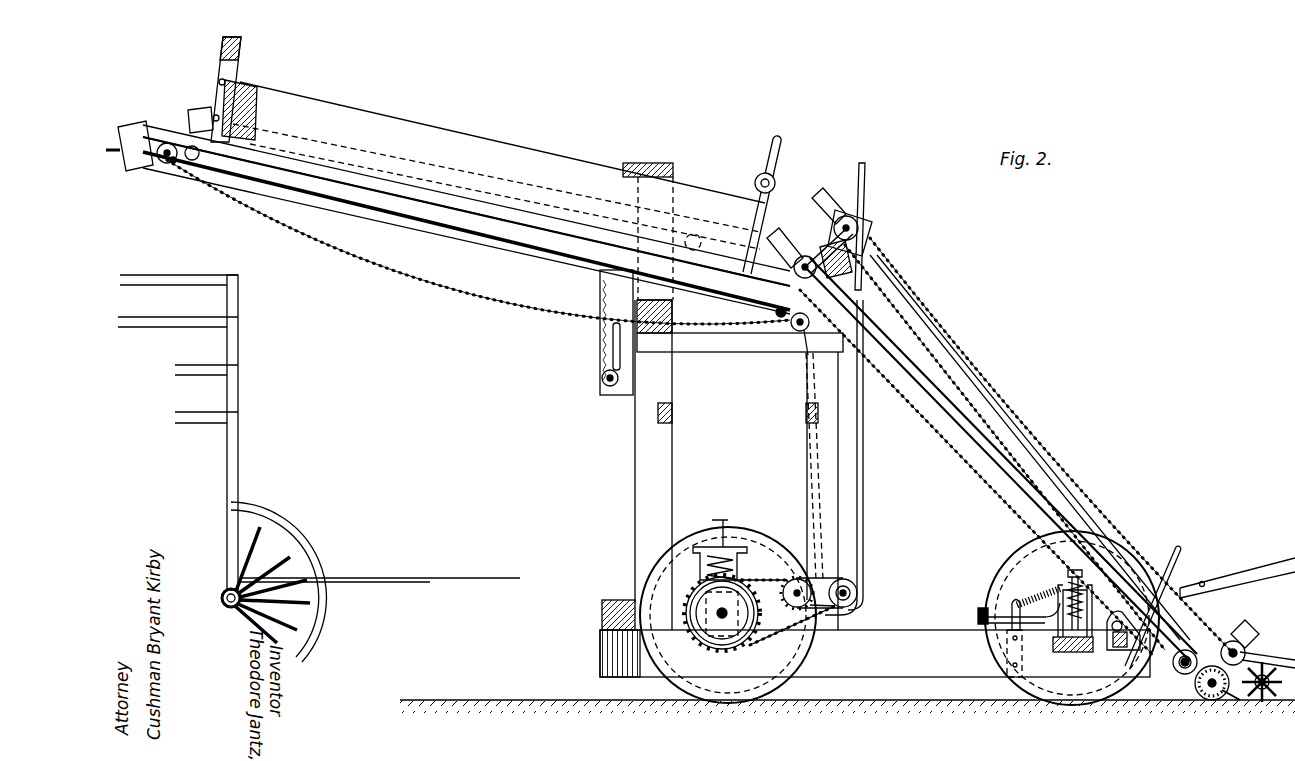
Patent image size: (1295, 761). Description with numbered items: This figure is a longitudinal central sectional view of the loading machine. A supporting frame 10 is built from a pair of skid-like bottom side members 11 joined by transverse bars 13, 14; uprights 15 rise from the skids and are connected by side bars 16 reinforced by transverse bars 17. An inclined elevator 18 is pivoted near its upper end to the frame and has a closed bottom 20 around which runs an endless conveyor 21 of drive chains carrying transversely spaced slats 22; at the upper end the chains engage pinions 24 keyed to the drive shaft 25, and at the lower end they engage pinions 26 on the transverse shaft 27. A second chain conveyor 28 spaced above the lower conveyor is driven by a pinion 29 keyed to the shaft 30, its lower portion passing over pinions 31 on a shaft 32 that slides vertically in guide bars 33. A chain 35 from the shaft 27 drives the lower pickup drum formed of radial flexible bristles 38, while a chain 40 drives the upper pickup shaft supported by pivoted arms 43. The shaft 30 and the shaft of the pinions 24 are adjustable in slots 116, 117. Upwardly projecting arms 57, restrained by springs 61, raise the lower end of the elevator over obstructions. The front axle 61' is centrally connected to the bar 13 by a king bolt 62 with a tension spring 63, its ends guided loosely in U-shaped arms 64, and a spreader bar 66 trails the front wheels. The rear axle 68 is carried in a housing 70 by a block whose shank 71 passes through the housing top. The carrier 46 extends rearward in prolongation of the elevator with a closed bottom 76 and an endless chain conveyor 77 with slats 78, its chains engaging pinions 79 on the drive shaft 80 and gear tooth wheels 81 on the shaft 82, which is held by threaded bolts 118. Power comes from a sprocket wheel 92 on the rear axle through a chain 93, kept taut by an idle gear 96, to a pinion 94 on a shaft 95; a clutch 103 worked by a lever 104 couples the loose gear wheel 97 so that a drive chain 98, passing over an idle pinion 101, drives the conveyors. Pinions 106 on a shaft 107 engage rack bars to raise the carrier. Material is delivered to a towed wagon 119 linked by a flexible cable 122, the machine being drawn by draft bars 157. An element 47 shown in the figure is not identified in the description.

The supporting frame 10 is at (635, 483).
The bottom side members 11 is at (600, 658).
The transverse bar 13 is at (1068, 652).
The transverse bar 14 is at (600, 618).
The uprights 15 is at (640, 452).
The side bars 16 is at (722, 352).
The transverse bars 17 is at (805, 412).
The inclined elevator 18 is at (947, 383).
The closed bottom 20 is at (1005, 495).
The endless conveyor 21 is at (965, 424).
The carrying ribs or slats 22 is at (917, 420).
The pinions 24 is at (802, 243).
The drive shaft 25 is at (808, 256).
The pinions 26 is at (1175, 668).
The transverse shaft 27 is at (1180, 688).
The chain conveyor 28 is at (1080, 478).
The pinion 29 is at (860, 226).
The shaft 30 is at (866, 236).
The pinions 31 is at (1255, 653).
The shaft 32 is at (1236, 645).
The guide bars 33 is at (1251, 633).
The chain 35 is at (1232, 688).
The radial flexible bristles 38 is at (1215, 700).
The chain 40 is at (1270, 677).
The arms 43 is at (1270, 692).
The carrier 46 is at (270, 165).
The connecting rod 47 is at (806, 360).
The upwardly projecting arm 57 is at (1178, 546).
The spring 61 is at (1024, 607).
The front axle 61' is at (1006, 653).
The king bolt 62 is at (1066, 576).
The tension spring 63 is at (1060, 590).
The U-shaped arms 64 is at (1115, 648).
The transverse spreader bar 66 is at (978, 616).
The rear axle 68 is at (690, 630).
The housing 70 is at (738, 585).
The shank 71 is at (728, 540).
The closed bottom 76 is at (463, 242).
The endless chain conveyor 77 is at (470, 240).
The transverse slats or ribs 78 is at (388, 262).
The pinions 79 is at (798, 332).
The drive shaft 80 is at (781, 318).
The gear tooth wheels 81 is at (175, 168).
The transverse shaft 82 is at (167, 145).
The sprocket wheel 92 is at (760, 575).
The endless chain 93 is at (822, 620).
The pinion 94 is at (858, 603).
The shaft 95 is at (858, 593).
The idle gear 96 is at (860, 600).
The gear wheel 97 is at (812, 590).
The endless drive chain 98 is at (866, 487).
The idle pinion 101 is at (693, 235).
The axially slidable clutch 103 is at (866, 580).
The lever 104 is at (867, 170).
The pinion 106 is at (598, 384).
The transverse shaft 107 is at (609, 387).
The slot 116 is at (818, 195).
The slot 117 is at (785, 240).
The threaded bolts 118 is at (142, 168).
The wagon or slip 119 is at (240, 467).
The flexible cable 122 is at (385, 577).
The draft bars 157 is at (1238, 583).